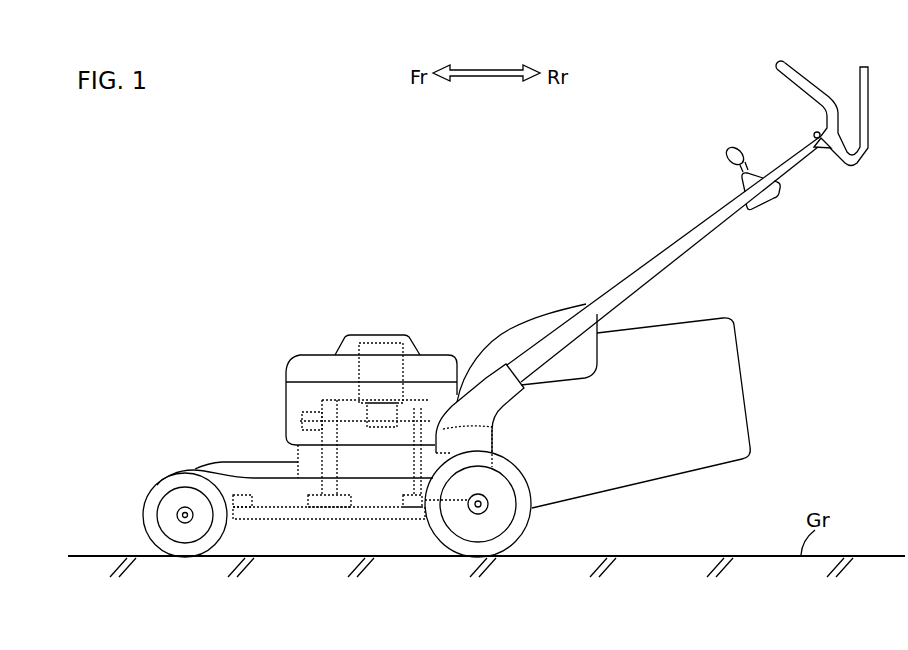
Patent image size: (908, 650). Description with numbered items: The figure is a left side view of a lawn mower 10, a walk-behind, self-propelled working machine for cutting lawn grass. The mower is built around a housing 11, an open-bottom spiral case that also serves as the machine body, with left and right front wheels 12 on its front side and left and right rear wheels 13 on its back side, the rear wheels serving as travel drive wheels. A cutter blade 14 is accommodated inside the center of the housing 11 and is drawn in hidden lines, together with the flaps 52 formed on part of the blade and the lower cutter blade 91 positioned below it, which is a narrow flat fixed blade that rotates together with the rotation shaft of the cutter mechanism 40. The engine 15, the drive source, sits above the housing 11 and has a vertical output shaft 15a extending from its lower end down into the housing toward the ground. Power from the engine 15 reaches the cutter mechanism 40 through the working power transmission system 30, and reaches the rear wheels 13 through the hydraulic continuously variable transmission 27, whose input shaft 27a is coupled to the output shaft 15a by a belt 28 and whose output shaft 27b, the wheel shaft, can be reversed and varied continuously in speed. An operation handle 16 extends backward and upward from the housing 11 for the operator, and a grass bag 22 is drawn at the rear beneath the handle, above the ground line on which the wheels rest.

The lawn mower 10 is at (207, 245).
The housing 11 is at (211, 465).
The front wheels 12 is at (180, 558).
The rear wheels 13 is at (503, 548).
The cutter blade 14 is at (293, 521).
The engine 15 is at (378, 342).
The output shaft 15a is at (365, 405).
The operation handle 16 is at (674, 250).
The grass bag 22 is at (743, 385).
The hydraulic continuously variable transmission 27 is at (502, 490).
The input shaft 27a is at (496, 428).
The output shaft (wheel shaft) 27b is at (486, 508).
The belt 28 is at (409, 390).
The working power transmission system 30 is at (299, 417).
The cutter mechanism 40 is at (322, 462).
The flaps 52 is at (241, 512).
The lower cutter blade 91 is at (352, 516).